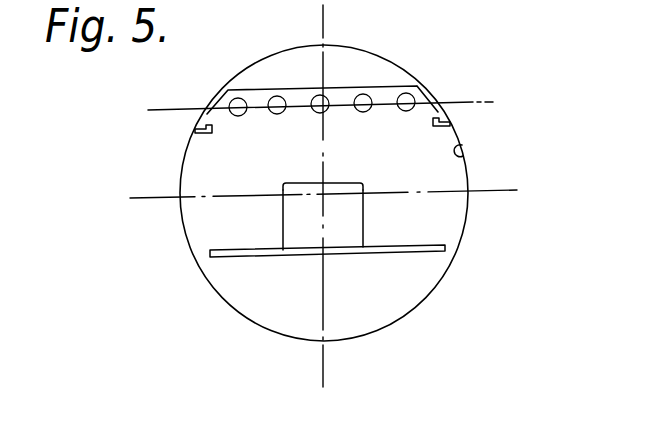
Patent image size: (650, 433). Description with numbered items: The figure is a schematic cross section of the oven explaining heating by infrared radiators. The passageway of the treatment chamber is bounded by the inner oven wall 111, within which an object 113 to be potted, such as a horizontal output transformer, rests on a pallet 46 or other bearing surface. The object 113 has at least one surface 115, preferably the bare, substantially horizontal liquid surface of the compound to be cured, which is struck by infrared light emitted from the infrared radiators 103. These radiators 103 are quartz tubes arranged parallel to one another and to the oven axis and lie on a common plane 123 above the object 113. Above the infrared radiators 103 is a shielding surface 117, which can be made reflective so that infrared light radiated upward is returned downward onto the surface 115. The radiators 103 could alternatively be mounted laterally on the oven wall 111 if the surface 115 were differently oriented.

The shielding surface 117 is at (358, 87).
The infrared radiator 103 is at (417, 87).
The plane 123 is at (463, 100).
The inner oven wall 111 is at (465, 155).
The surface 115 is at (303, 182).
The object 113 is at (353, 222).
The pallet 46 is at (312, 255).